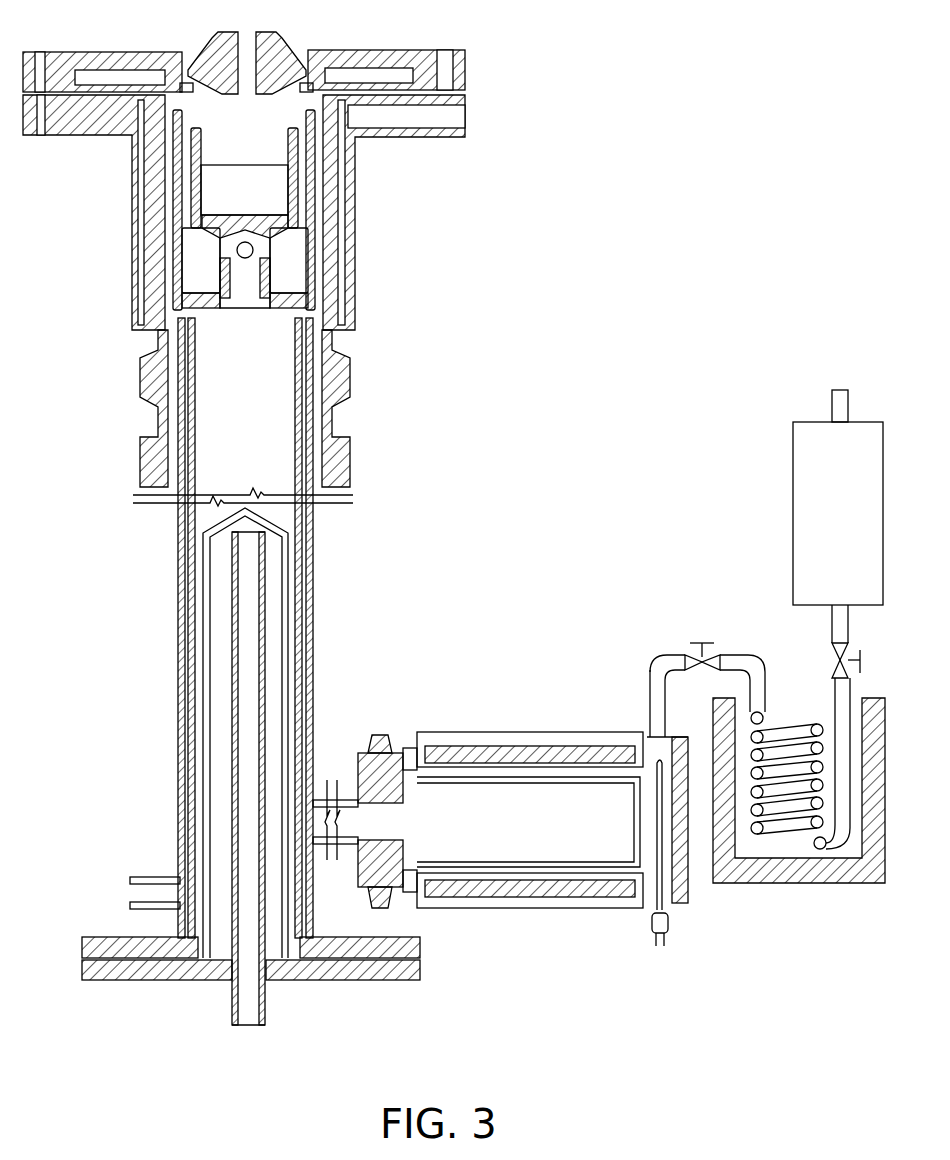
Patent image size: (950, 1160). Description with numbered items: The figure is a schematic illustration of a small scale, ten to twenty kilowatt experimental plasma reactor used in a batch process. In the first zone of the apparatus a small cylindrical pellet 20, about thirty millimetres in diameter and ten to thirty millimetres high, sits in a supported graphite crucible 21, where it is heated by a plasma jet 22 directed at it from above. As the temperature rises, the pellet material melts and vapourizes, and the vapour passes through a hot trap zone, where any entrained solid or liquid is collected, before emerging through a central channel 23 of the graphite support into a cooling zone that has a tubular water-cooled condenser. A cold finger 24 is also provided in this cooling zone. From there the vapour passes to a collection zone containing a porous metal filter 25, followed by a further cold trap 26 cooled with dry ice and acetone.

The cylindrical pellet 20 is at (218, 193).
The graphite crucible 21 is at (183, 238).
The plasma jet 22 is at (260, 108).
The central channel of graphite support 23 is at (252, 285).
The cold finger 24 is at (287, 597).
The porous metal filter 25 is at (527, 780).
The cold trap 26 is at (840, 850).